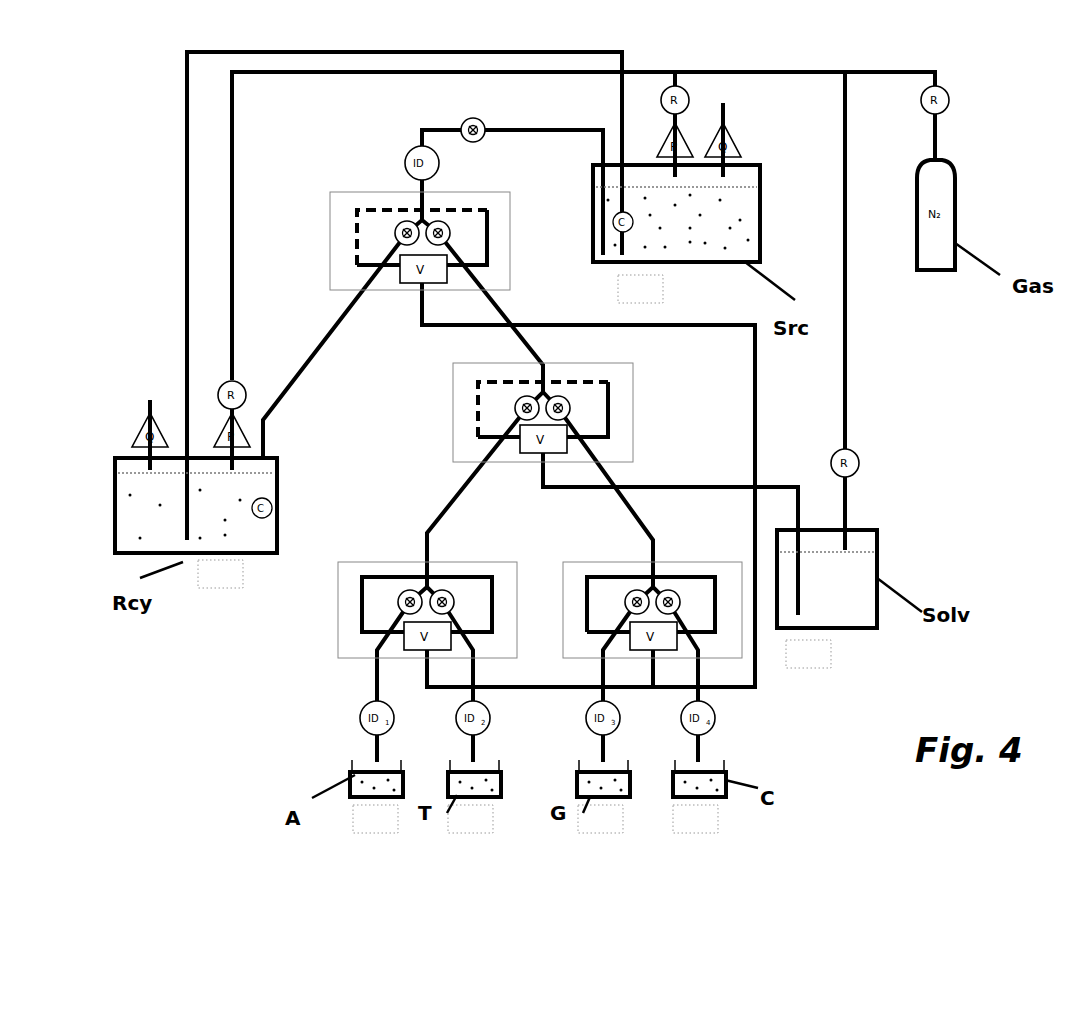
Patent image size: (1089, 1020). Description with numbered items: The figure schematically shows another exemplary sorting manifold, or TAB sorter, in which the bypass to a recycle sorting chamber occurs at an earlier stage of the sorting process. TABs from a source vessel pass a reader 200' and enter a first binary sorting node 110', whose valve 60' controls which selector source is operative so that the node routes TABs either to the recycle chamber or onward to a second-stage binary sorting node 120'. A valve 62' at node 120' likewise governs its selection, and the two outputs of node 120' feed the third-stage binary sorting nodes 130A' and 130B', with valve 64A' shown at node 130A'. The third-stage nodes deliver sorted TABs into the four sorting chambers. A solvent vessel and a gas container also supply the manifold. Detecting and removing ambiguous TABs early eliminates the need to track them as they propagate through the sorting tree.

The TAB reader 200' is at (402, 139).
The binary sorting node 110' is at (389, 240).
The valve 60' is at (397, 297).
The binary sorting node 120' is at (535, 419).
The valve 62' is at (611, 450).
The binary sorting node 130A' is at (385, 590).
The binary sorting node 130B' is at (610, 582).
The valve 64A' is at (352, 658).